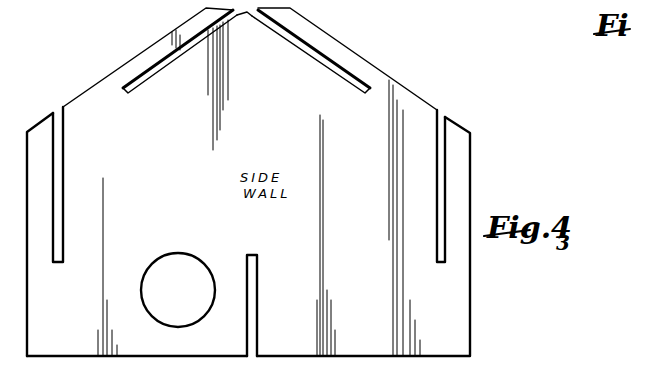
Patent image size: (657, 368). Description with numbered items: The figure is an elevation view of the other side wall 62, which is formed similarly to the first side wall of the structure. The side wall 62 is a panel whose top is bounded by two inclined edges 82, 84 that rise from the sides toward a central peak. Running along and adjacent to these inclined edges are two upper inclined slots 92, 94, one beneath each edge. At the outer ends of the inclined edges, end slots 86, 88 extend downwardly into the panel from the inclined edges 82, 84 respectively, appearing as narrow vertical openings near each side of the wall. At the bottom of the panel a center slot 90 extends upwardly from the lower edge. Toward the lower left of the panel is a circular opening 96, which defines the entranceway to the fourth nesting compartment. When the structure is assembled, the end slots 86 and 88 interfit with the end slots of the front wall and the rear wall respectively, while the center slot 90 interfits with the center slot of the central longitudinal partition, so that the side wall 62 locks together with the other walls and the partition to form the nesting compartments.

The side wall 62 is at (470, 305).
The inclined edge 82 is at (365, 63).
The inclined edge 84 is at (122, 65).
The end slot 86 is at (437, 157).
The end slot 88 is at (63, 185).
The center slot 90 is at (257, 283).
The upper inclined slot 92 is at (340, 79).
The upper inclined slot 94 is at (165, 69).
The circular opening 96 is at (190, 253).